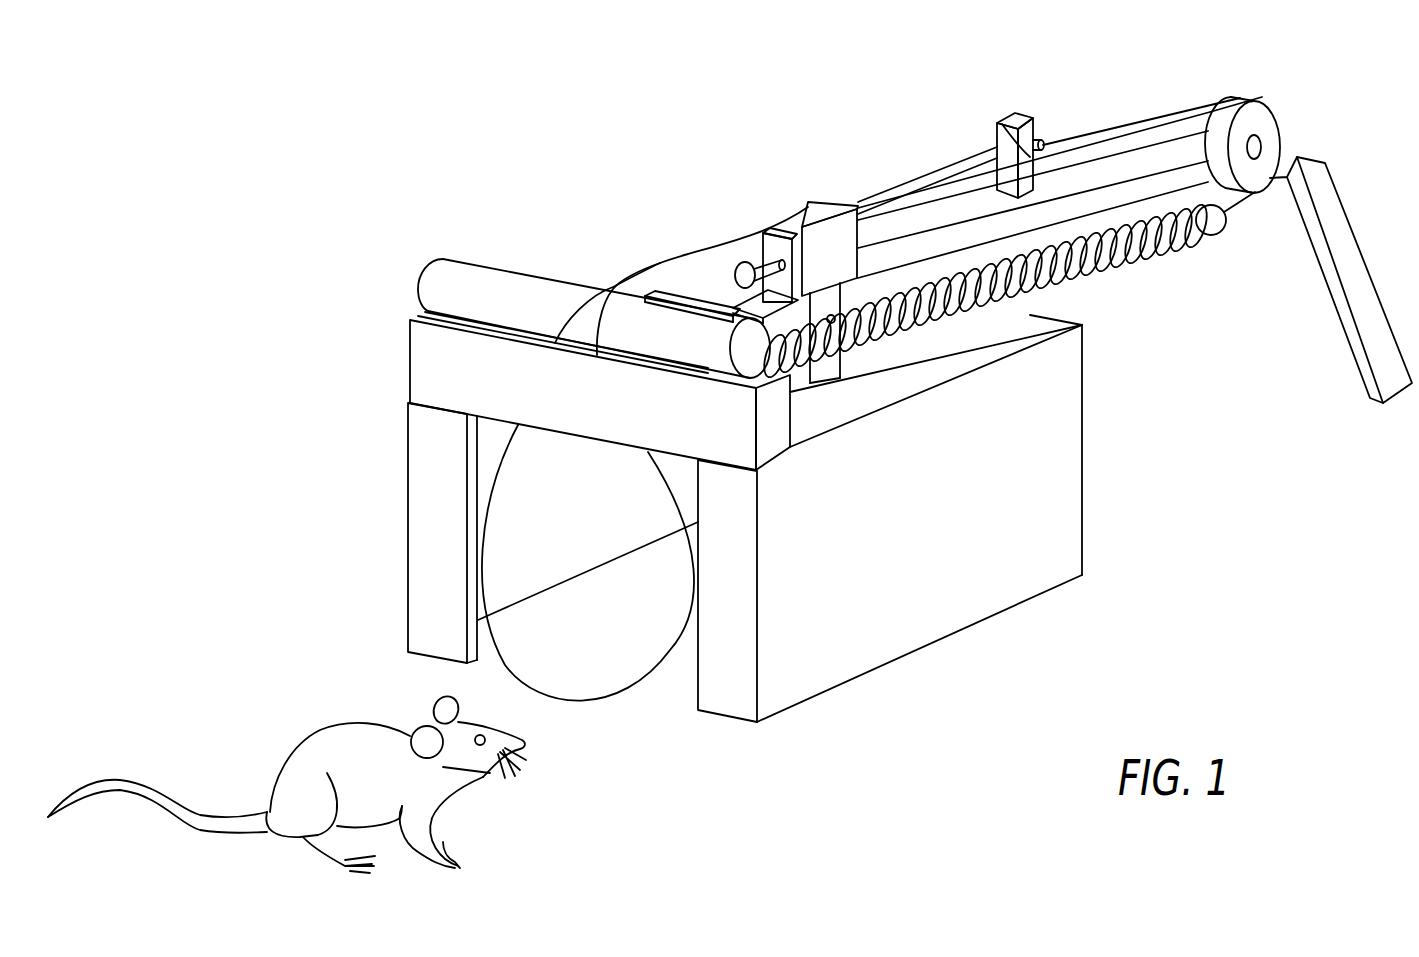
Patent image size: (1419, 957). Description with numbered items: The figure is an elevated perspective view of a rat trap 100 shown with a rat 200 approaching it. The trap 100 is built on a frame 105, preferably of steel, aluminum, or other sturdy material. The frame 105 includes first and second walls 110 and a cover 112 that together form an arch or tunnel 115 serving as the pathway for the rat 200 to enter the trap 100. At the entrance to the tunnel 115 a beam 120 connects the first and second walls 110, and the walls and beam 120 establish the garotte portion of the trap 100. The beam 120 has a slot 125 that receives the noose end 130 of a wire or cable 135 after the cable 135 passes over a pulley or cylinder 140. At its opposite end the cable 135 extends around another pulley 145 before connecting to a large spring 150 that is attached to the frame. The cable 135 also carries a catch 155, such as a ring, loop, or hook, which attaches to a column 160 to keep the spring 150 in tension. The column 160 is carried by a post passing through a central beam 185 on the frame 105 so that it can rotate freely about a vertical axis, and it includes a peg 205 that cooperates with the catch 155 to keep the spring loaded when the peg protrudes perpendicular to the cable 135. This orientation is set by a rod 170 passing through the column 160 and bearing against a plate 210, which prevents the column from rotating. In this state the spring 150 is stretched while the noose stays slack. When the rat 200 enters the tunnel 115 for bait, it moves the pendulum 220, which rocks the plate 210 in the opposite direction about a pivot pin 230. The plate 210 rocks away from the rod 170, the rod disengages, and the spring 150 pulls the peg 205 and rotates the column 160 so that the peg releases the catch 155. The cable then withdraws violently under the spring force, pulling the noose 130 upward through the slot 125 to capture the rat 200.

The trap 100 is at (1152, 588).
The frame 105 is at (427, 363).
The first and second walls 110 is at (572, 543).
The cover 112 is at (863, 400).
The tunnel 115 is at (674, 700).
The beam 120 is at (777, 447).
The slot 125 is at (468, 324).
The noose end 130 is at (505, 458).
The cable 135 is at (677, 258).
The pulley or cylinder 140 is at (503, 283).
The pulley 145 is at (1273, 123).
The spring 150 is at (1130, 267).
The catch 155 is at (1000, 122).
The column 160 is at (1022, 118).
The rod 170 is at (947, 175).
The central beam 185 is at (1218, 97).
The rat 200 is at (310, 773).
The peg 205 is at (1048, 140).
The plate 210 is at (828, 203).
The pendulum 220 is at (837, 302).
The pivot pin 230 is at (832, 320).